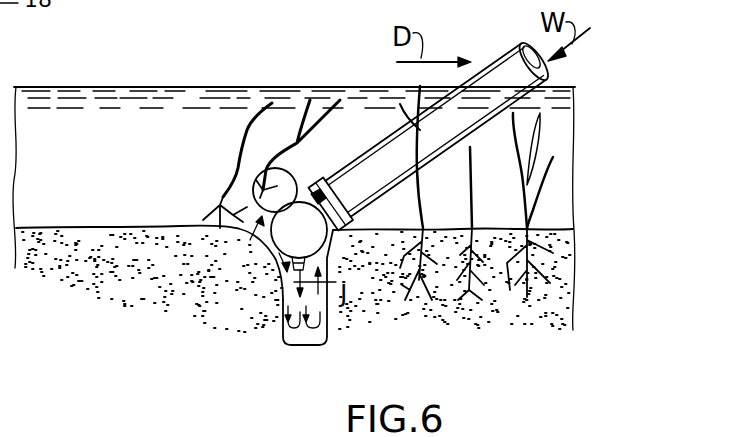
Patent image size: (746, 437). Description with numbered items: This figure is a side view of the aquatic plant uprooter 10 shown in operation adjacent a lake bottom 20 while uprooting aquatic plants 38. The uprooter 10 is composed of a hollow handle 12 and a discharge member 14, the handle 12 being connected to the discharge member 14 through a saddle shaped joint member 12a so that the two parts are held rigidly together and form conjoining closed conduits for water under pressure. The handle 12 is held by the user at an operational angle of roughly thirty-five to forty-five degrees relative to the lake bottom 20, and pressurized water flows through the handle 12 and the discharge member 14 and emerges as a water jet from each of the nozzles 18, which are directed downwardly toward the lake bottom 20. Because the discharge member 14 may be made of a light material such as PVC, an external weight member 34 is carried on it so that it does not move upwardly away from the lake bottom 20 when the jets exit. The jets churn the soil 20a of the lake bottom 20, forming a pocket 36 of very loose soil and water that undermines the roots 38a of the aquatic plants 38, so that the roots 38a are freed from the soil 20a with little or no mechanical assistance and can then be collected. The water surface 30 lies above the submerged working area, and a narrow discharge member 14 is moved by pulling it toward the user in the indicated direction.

The aquatic plant uprooter 10 is at (489, 42).
The handle 12 is at (408, 118).
The saddle shaped joint member 12a is at (340, 230).
The discharge member 14 is at (279, 242).
The nozzles 18 is at (284, 282).
The lake bottom 20 is at (101, 222).
The soil 20a is at (162, 289).
The water surface 30 is at (125, 85).
The external weight member 34 is at (282, 186).
The pocket 36 is at (285, 336).
The aquatic plants 38 is at (243, 132).
The roots 38a is at (220, 180).